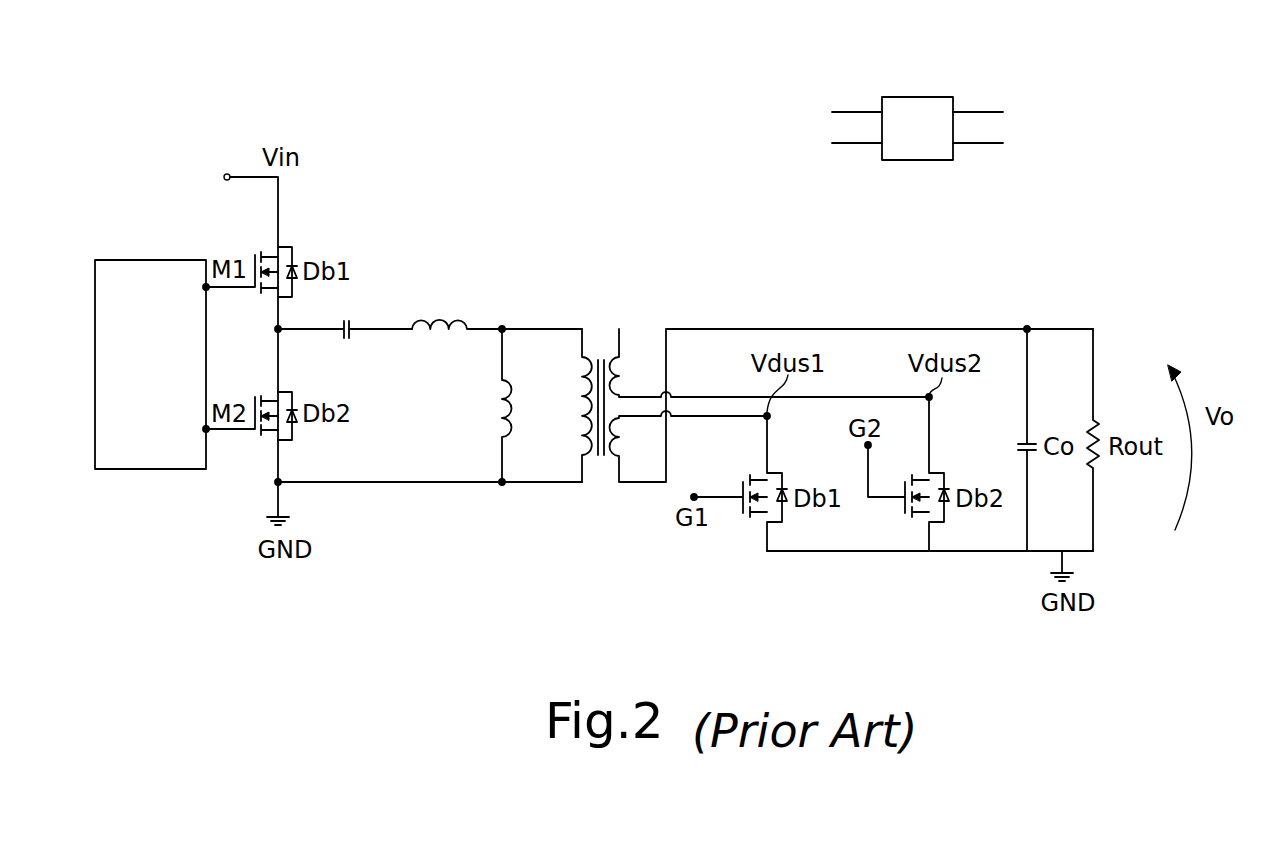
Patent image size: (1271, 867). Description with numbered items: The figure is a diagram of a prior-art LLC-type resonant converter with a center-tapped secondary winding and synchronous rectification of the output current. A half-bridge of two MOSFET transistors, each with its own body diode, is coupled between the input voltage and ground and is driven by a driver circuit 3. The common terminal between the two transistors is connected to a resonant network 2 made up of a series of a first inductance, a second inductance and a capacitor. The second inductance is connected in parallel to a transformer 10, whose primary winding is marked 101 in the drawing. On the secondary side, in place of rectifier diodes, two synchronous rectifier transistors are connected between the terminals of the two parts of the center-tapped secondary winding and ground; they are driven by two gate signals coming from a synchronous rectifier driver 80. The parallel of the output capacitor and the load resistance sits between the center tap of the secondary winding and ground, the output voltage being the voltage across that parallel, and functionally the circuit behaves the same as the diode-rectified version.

The driver circuit 3 is at (147, 275).
The resonant network 2 is at (509, 302).
The transformer 10 is at (811, 344).
The primary winding 101 is at (561, 405).
The synchronous rectifier driver 80 is at (915, 108).